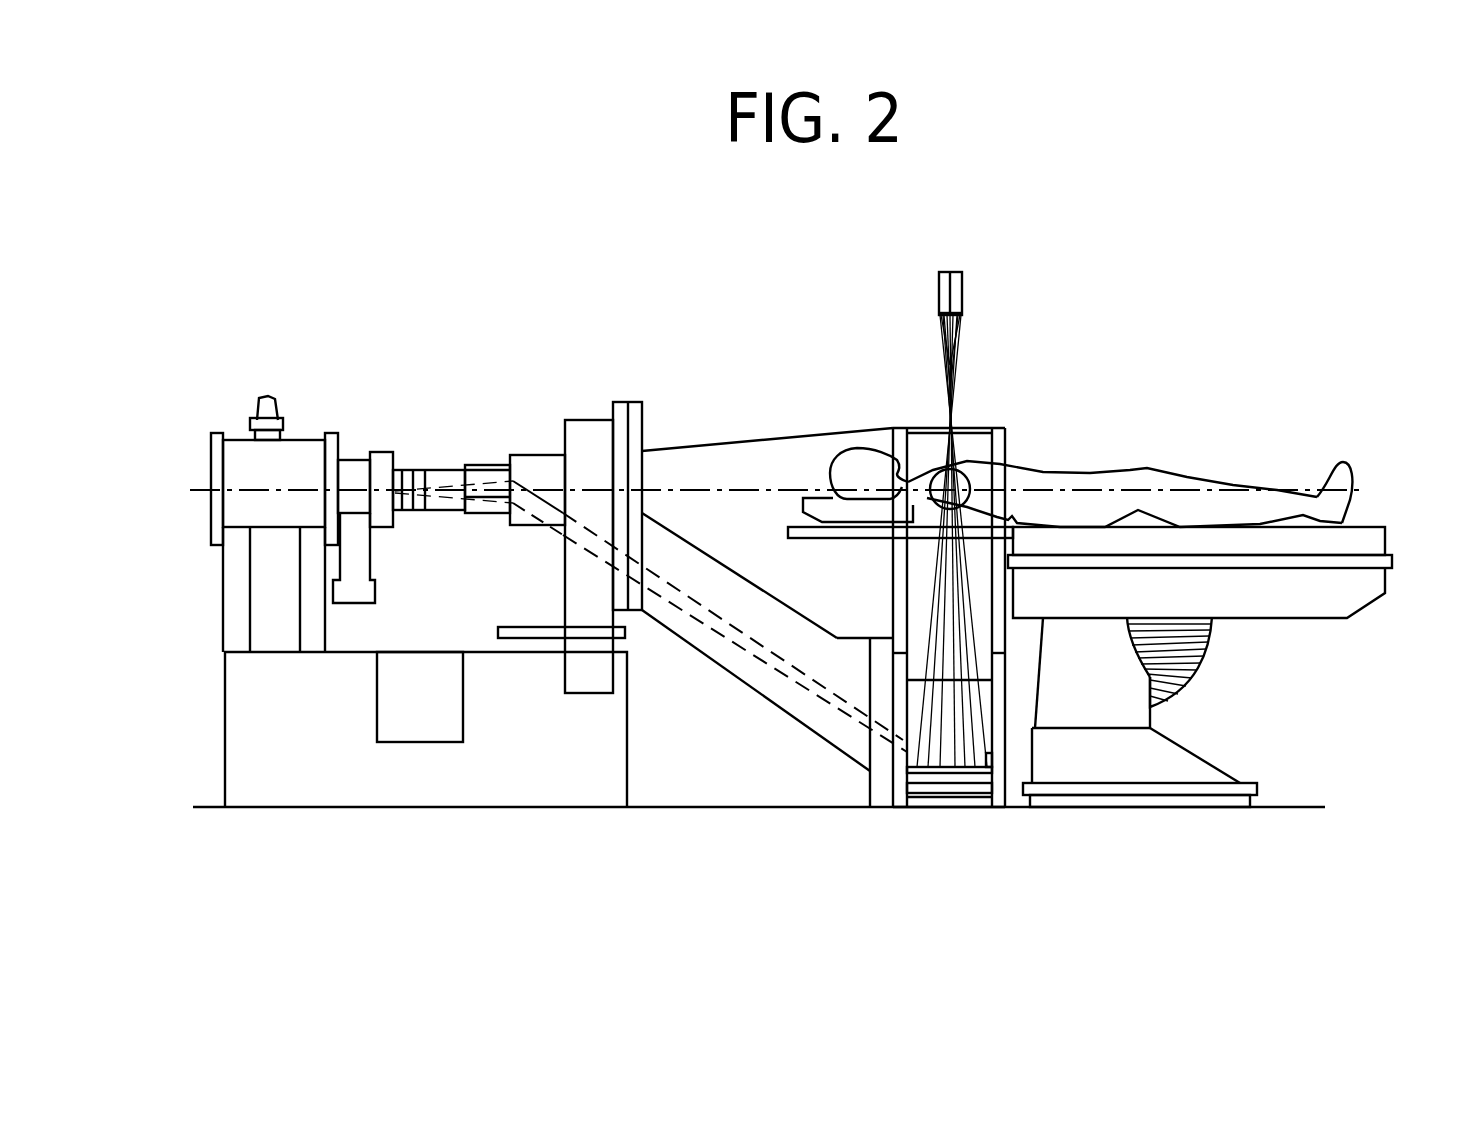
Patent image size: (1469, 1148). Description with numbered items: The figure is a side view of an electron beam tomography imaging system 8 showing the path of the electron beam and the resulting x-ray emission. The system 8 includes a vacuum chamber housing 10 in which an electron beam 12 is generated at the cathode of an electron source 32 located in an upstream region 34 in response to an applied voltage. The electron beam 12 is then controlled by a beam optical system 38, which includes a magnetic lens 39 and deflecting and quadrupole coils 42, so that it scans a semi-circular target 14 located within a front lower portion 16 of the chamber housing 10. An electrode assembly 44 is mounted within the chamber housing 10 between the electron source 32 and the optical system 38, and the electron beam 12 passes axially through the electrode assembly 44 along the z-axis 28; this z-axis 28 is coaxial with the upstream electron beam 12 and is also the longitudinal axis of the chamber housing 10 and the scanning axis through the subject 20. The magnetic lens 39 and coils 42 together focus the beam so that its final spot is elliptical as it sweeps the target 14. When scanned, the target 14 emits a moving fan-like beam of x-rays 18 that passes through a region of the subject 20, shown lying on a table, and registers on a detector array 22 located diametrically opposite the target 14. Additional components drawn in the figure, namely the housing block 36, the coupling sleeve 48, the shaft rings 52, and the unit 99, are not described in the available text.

The imaging system 8 is at (570, 457).
The vacuum chamber housing 10 is at (700, 384).
The electron beam 12 is at (447, 527).
The semi-circular target 14 is at (929, 773).
The front lower portion 16 is at (993, 797).
The x-rays 18 is at (918, 590).
The subject 20 is at (990, 482).
The detector array 22 is at (963, 293).
The z-axis 28 is at (193, 493).
The electron source 32 is at (314, 452).
The upstream region 34 is at (276, 383).
The housing block 36 is at (590, 408).
The beam optical system 38 is at (498, 365).
The magnetic lens 39 is at (495, 514).
The coils 42 is at (535, 454).
The electrode assembly 44 is at (418, 468).
The coupling sleeve 48 is at (478, 514).
The shaft rings 52 is at (455, 470).
The control unit 99 is at (377, 705).